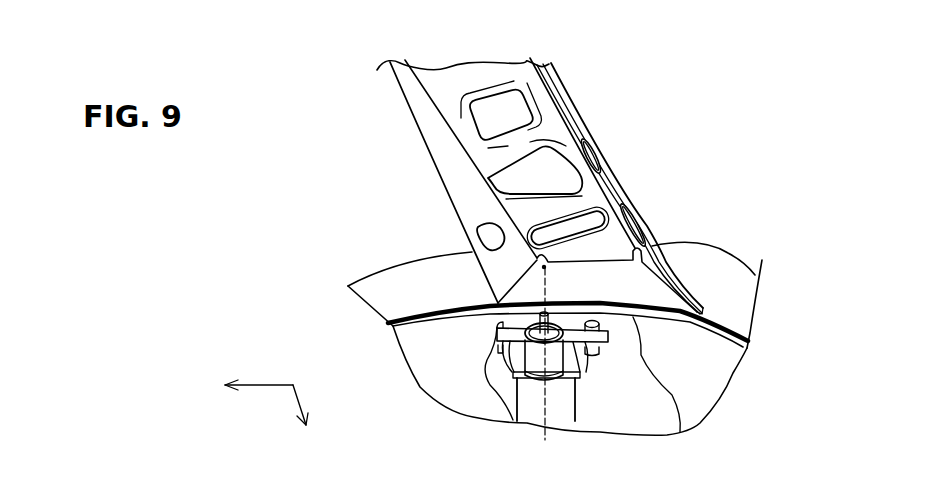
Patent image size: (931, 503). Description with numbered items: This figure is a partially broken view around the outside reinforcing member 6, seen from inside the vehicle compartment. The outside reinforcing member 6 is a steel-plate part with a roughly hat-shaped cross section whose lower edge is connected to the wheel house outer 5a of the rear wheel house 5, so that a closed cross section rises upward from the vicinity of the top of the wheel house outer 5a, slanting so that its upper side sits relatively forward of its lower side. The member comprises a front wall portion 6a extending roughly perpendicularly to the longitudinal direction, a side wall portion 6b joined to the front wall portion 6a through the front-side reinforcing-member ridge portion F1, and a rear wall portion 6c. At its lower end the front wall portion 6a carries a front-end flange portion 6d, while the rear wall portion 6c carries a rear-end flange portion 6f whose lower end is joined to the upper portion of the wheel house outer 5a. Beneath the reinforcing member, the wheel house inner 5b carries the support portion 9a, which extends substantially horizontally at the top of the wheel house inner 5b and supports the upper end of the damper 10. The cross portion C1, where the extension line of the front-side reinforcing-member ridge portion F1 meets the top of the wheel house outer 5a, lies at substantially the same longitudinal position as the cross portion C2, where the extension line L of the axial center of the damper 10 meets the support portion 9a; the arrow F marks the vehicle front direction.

The outside reinforcing member 6 is at (551, 174).
The front wall portion 6a is at (423, 139).
The side wall portion 6b is at (437, 70).
The rear wall portion 6c is at (580, 130).
The front-end flange portion 6d is at (495, 303).
The rear-end flange portion 6f is at (700, 312).
The front-side reinforcing-member ridge portion F1 is at (477, 176).
The rear wheel house 5 is at (573, 323).
The wheel house outer 5a is at (705, 262).
The wheel house inner 5b is at (745, 350).
The cross portion C1 is at (536, 267).
The cross portion C2 is at (548, 322).
The support portion 9a is at (490, 335).
The damper 10 is at (577, 398).
The extension line L is at (548, 433).
The front direction arrow F is at (257, 385).